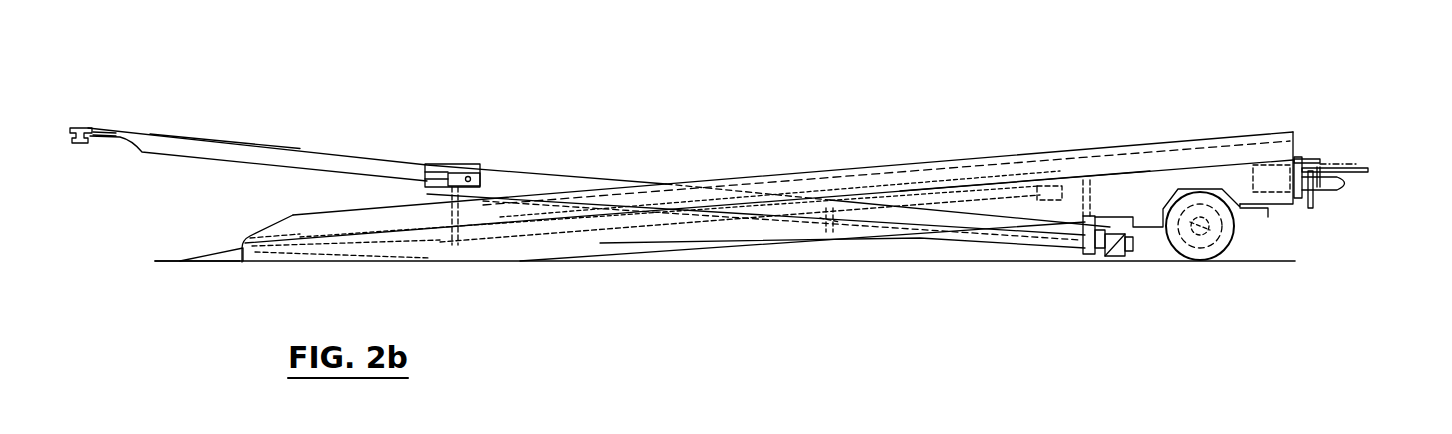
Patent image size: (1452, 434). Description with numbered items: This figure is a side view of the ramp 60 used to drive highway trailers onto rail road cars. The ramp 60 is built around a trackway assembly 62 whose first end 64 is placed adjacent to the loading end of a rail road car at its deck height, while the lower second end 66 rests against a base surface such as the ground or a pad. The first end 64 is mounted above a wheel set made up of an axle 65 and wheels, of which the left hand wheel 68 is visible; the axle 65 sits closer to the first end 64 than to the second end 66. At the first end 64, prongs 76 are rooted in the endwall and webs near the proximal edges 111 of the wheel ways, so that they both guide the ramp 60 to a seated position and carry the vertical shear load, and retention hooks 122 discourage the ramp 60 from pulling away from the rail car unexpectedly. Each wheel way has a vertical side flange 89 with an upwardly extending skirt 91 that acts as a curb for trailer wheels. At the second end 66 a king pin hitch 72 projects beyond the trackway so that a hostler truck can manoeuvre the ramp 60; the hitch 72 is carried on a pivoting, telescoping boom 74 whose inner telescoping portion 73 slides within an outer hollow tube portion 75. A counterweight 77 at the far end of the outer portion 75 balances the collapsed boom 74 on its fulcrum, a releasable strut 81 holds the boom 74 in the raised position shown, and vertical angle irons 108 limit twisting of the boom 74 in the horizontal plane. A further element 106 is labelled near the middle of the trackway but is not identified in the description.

The ramp 60 is at (714, 105).
The trackway assembly 62 is at (843, 198).
The first end 64 is at (1267, 132).
The axle 65 is at (1176, 262).
The second end 66 is at (263, 230).
The left hand wheel 68 is at (1213, 258).
The king pin hitch 72 is at (101, 132).
The inner telescoping portion 73 is at (210, 148).
The pivoting, telescoping boom 74 is at (265, 156).
The outer hollow tube portion 75 is at (987, 242).
The prong 76 is at (1332, 190).
The counterweight 77 is at (1118, 262).
The releasable strut 81 is at (432, 199).
The vertical side flange 89 is at (1098, 157).
The upwardly extending skirt 91 is at (970, 168).
The pivot pin 106 is at (847, 230).
The vertical angle irons 108 is at (453, 170).
The proximal edges 111 is at (1298, 160).
The retention hooks 122 is at (1335, 166).